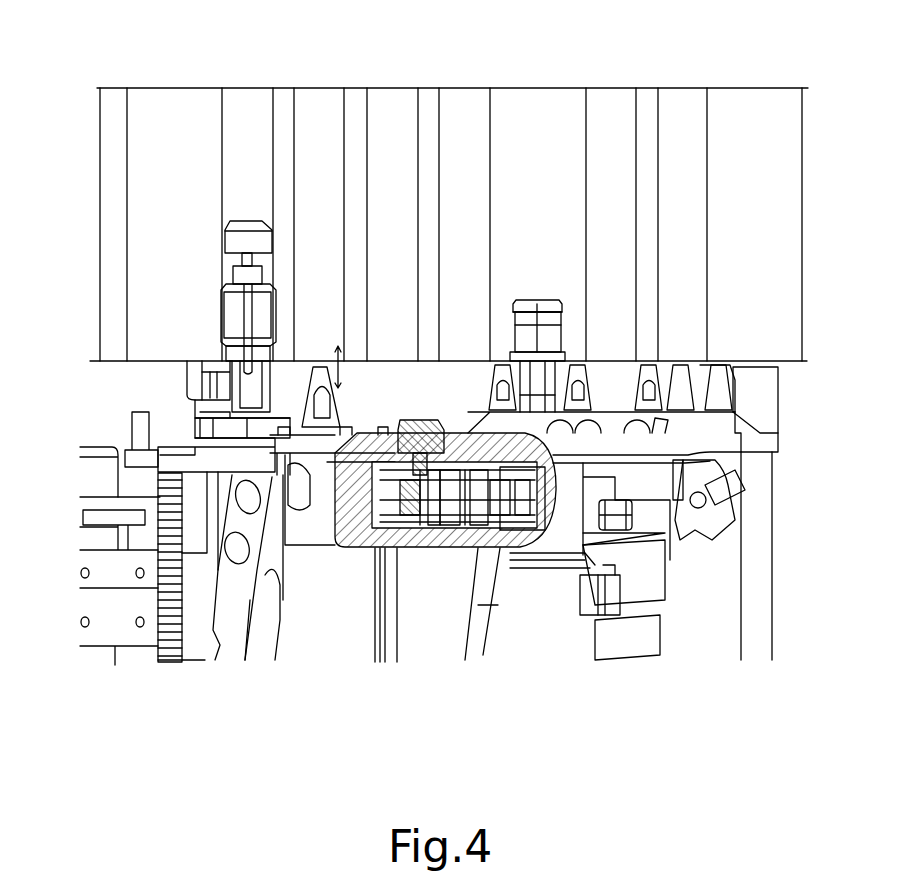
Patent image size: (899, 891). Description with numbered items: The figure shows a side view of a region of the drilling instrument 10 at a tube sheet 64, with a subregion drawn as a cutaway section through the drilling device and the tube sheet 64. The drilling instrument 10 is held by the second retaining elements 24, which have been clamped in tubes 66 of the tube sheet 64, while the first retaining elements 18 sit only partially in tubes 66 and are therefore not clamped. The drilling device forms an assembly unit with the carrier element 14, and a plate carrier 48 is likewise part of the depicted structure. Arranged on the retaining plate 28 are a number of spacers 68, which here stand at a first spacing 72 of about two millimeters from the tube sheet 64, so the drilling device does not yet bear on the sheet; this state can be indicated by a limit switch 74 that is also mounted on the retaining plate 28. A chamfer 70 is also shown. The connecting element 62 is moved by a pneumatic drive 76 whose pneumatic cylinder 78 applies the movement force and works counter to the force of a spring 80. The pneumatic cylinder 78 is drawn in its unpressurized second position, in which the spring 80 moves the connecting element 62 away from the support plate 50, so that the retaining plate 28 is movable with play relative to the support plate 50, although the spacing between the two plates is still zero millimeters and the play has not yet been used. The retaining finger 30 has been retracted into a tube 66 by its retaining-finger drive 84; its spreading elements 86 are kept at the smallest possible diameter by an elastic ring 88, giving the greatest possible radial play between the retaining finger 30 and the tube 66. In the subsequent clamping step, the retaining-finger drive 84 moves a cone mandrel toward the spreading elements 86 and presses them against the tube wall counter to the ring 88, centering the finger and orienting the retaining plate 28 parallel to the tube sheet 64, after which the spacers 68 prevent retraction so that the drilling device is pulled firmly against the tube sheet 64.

The drilling instrument 10 is at (178, 728).
The carrier element 14 is at (232, 642).
The first retaining elements 18 is at (200, 375).
The second retaining elements 24 is at (241, 237).
The retaining plate 28 is at (758, 440).
The retaining finger 30 is at (530, 310).
The plate carrier 48 is at (362, 512).
The support plate 50 is at (362, 515).
The connecting element 62 is at (505, 545).
The tube sheet 64 is at (150, 110).
The tubes 66 is at (255, 104).
The spacers 68 is at (498, 387).
The chamfer 70 is at (556, 305).
The first spacing 72 is at (342, 372).
The limit switch 74 is at (690, 378).
The pneumatic drive 76 is at (500, 562).
The pneumatic cylinder 78 is at (450, 520).
The spring 80 is at (422, 512).
The retaining-finger drive 84 is at (572, 620).
The spreading elements 86 is at (564, 300).
The ring 88 is at (522, 305).